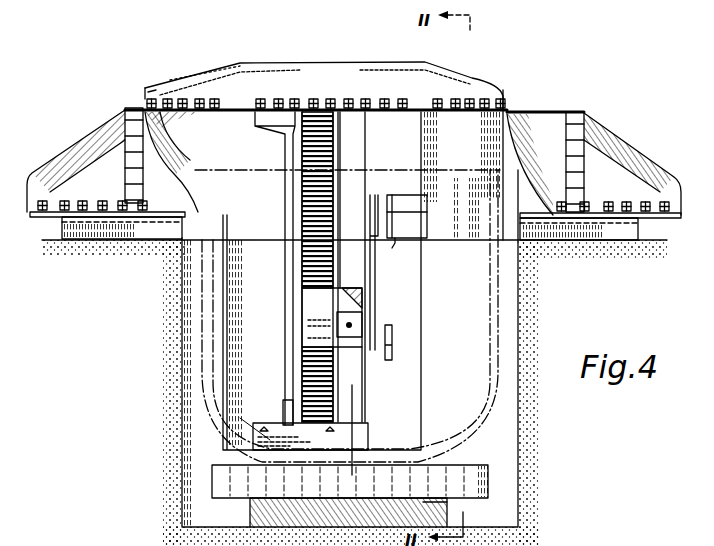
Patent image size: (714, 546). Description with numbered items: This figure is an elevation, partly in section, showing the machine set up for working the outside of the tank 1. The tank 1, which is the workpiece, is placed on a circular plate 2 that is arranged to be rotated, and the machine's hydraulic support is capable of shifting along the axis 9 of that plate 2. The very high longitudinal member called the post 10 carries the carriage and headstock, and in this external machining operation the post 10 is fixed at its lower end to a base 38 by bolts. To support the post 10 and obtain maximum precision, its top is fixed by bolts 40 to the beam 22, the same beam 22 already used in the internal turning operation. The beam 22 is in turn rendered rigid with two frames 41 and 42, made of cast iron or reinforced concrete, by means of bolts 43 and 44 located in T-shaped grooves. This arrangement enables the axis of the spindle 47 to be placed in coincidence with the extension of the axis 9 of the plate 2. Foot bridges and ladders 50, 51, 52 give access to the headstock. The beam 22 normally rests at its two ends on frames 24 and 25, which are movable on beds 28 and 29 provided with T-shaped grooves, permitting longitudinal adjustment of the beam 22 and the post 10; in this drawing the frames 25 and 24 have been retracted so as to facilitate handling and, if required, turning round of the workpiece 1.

The tank 1 is at (505, 375).
The circular plate 2 is at (490, 476).
The axis 9 is at (368, 388).
The post 10 is at (302, 268).
The beam 22 is at (440, 76).
The frame 24 is at (92, 156).
The frame 25 is at (556, 126).
The bed 28 is at (112, 222).
The bed 29 is at (605, 230).
The base 38 is at (338, 437).
The bolts 40 is at (278, 104).
The frame 41 is at (203, 114).
The frame 42 is at (512, 132).
The bolts 43 is at (147, 88).
The bolts 44 is at (486, 130).
The spindle 47 is at (362, 320).
The foot bridges and ladders 50 is at (370, 263).
The foot bridges and ladders 51 is at (370, 284).
The foot bridges and ladders 52 is at (393, 352).